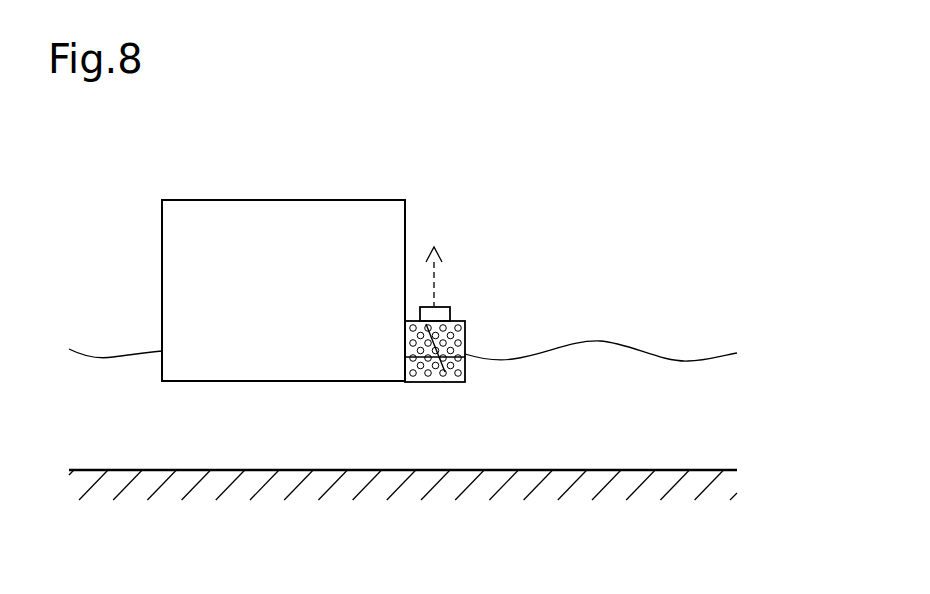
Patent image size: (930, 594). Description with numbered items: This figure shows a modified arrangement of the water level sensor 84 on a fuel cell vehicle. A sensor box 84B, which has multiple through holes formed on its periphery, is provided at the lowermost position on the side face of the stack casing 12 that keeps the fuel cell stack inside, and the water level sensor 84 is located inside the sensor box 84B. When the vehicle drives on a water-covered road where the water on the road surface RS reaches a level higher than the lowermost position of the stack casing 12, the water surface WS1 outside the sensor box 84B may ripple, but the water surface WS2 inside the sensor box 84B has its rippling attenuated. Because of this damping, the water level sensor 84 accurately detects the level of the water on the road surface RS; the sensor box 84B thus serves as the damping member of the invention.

The stack casing 12 is at (162, 227).
The water level sensor 84 is at (440, 307).
The sensor box 84B is at (456, 320).
The water surface WS1 is at (603, 341).
The water surface WS2 is at (468, 353).
The road surface RS is at (710, 470).